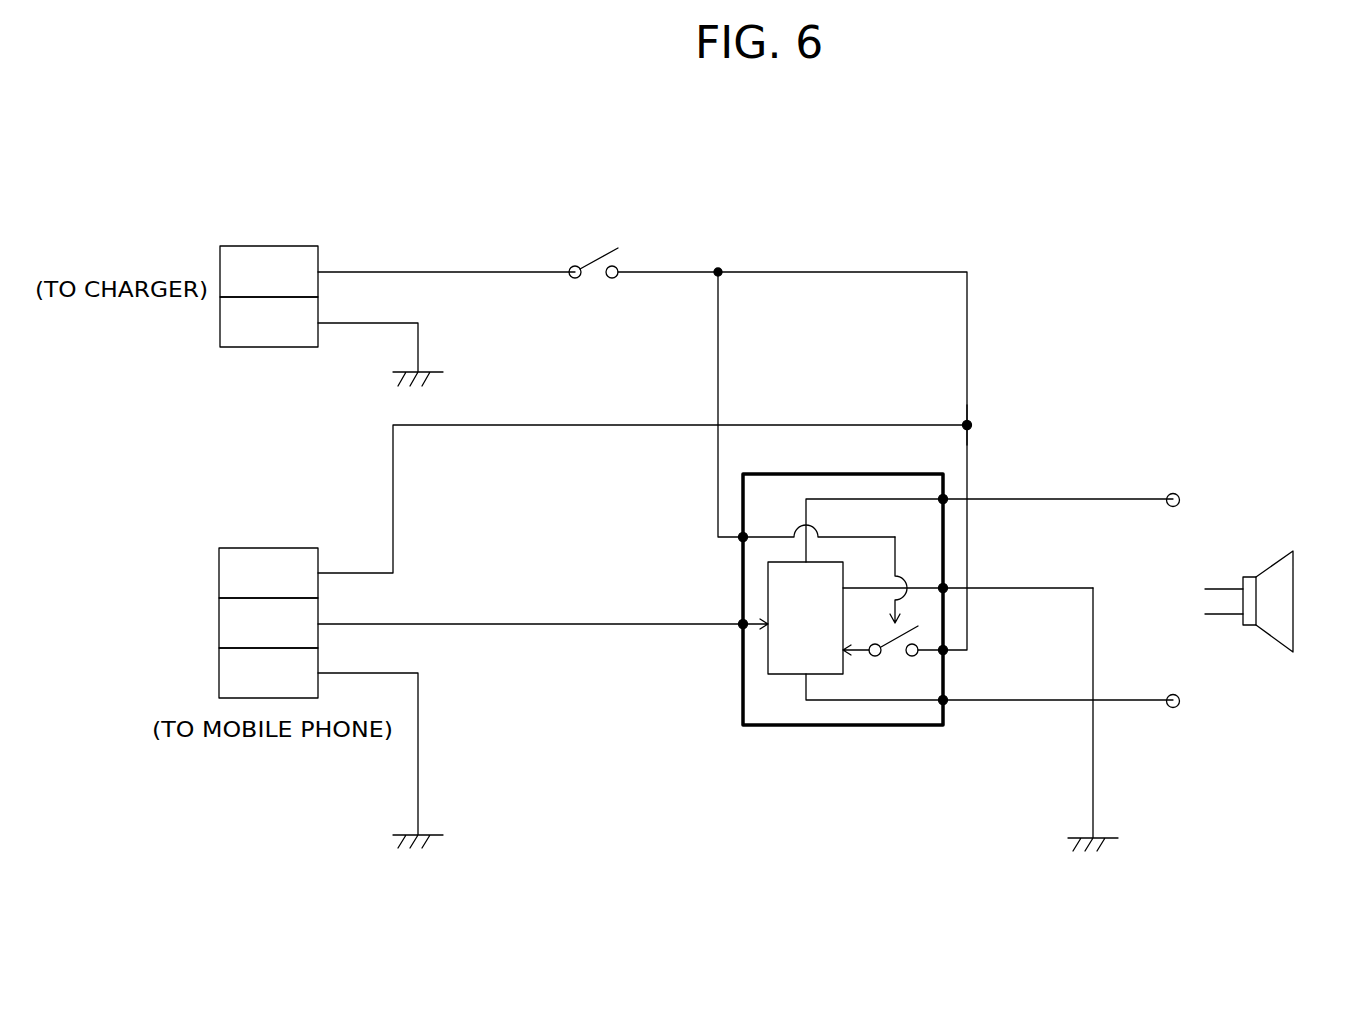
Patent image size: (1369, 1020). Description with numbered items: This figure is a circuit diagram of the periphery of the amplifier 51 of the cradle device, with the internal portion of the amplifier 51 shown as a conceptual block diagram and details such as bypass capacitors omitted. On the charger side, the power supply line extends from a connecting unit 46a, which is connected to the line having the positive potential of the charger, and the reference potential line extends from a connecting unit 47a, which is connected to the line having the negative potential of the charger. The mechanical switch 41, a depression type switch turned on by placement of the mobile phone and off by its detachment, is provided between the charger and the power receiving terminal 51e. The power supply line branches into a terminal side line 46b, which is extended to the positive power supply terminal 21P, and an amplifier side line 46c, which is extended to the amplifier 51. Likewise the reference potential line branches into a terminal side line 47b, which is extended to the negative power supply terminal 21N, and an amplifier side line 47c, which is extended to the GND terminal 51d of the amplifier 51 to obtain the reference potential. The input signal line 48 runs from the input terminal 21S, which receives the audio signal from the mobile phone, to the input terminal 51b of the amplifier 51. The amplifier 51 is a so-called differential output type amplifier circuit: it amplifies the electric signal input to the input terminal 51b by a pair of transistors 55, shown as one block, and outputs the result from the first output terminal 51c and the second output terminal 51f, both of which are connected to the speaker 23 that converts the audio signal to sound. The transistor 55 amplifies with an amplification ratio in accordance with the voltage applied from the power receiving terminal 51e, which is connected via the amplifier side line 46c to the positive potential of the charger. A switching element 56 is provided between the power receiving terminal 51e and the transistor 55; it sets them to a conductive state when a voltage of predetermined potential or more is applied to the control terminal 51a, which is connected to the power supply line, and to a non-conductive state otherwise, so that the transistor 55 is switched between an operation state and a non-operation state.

The connecting unit 46a is at (268, 255).
The connecting unit 47a is at (268, 342).
The mechanical switch 41 is at (640, 240).
The terminal side line 46b is at (542, 426).
The amplifier side line 46c is at (968, 440).
The positive power supply terminal 21P is at (219, 574).
The input terminal 21S is at (219, 625).
The negative power supply terminal 21N is at (219, 675).
The input signal line 48 is at (557, 625).
The terminal side line 47b is at (419, 742).
The amplifier 51 is at (843, 727).
The control terminal 51a is at (743, 537).
The input terminal 51b is at (743, 626).
The first output terminal 51c is at (943, 499).
The GND terminal 51d is at (943, 588).
The power receiving terminal 51e is at (943, 650).
The second output terminal 51f is at (943, 700).
The transistor 55 is at (768, 584).
The switching element 56 is at (898, 666).
The amplifier side line 47c is at (1094, 770).
The speaker 23 is at (1293, 597).